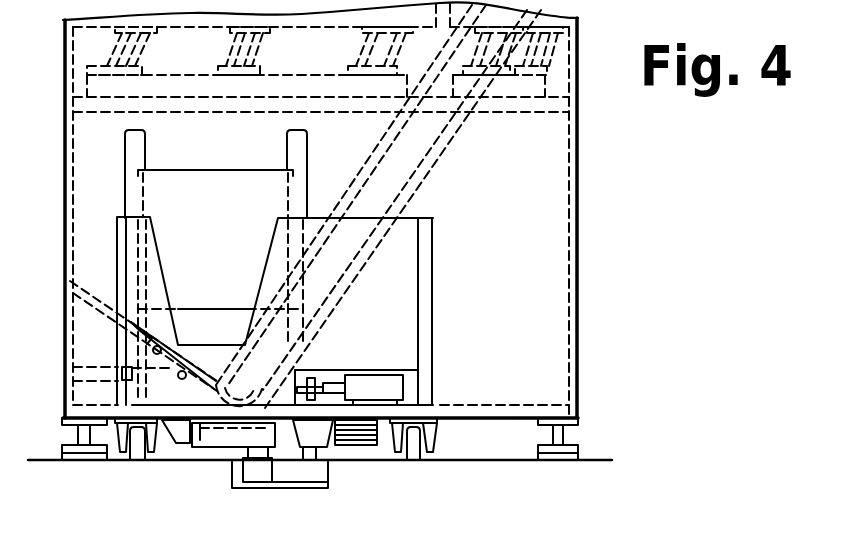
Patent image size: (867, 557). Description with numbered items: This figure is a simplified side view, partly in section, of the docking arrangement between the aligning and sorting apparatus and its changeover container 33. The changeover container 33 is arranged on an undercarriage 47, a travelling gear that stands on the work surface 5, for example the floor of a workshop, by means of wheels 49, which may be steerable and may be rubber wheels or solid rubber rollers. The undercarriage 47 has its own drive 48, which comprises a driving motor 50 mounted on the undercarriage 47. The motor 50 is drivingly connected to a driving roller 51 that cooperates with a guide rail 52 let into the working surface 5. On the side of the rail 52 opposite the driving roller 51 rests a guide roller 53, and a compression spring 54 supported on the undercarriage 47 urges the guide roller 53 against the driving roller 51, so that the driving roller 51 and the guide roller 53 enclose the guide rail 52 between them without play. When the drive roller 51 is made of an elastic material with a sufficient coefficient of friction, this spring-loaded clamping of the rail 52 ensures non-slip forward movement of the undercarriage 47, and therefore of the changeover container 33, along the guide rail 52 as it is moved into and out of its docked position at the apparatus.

The work surface 5 is at (600, 459).
The changeover container 33 is at (381, 359).
The undercarriage 47 is at (213, 450).
The drive 48 is at (378, 450).
The wheels 49 is at (432, 418).
The driving motor 50 is at (343, 417).
The driving roller 51 is at (333, 472).
The guide rail 52 is at (283, 478).
The guide roller 53 is at (250, 487).
The compression spring 54 is at (196, 445).